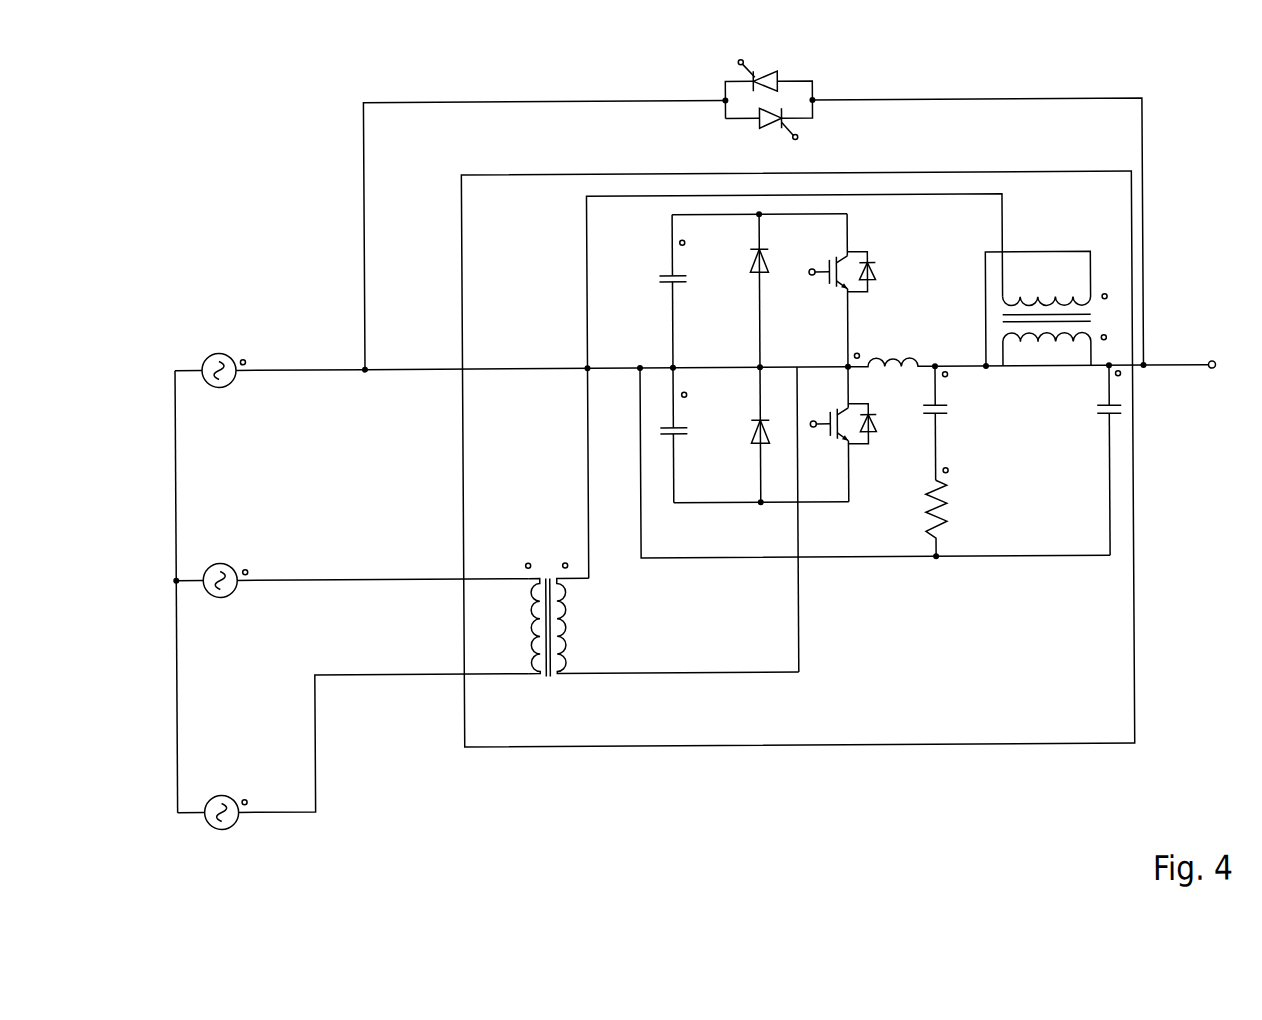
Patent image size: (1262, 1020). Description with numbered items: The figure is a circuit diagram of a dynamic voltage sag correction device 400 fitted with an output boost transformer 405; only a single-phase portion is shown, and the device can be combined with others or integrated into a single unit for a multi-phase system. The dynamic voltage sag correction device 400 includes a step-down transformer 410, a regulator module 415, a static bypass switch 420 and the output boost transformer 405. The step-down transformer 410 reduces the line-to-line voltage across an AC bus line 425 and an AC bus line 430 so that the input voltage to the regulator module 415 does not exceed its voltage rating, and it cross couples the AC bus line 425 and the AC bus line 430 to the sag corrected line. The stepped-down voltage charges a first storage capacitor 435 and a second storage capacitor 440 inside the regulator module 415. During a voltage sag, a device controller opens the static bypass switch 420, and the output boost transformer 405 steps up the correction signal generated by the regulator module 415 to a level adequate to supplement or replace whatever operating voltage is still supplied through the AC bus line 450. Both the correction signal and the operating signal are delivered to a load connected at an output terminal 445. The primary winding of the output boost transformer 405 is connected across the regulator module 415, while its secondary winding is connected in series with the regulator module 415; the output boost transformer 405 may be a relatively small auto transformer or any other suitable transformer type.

The dynamic voltage sag correction device 400 is at (214, 114).
The output boost transformer 405 is at (1092, 290).
The step-down transformer 410 is at (566, 670).
The regulator module 415 is at (975, 601).
The static bypass switch 420 is at (802, 83).
The AC bus line 425 is at (281, 578).
The AC bus line 430 is at (313, 764).
The first storage capacitor 435 is at (669, 274).
The second storage capacitor 440 is at (681, 425).
The output terminal 445 is at (1218, 376).
The AC bus line 450 is at (263, 368).